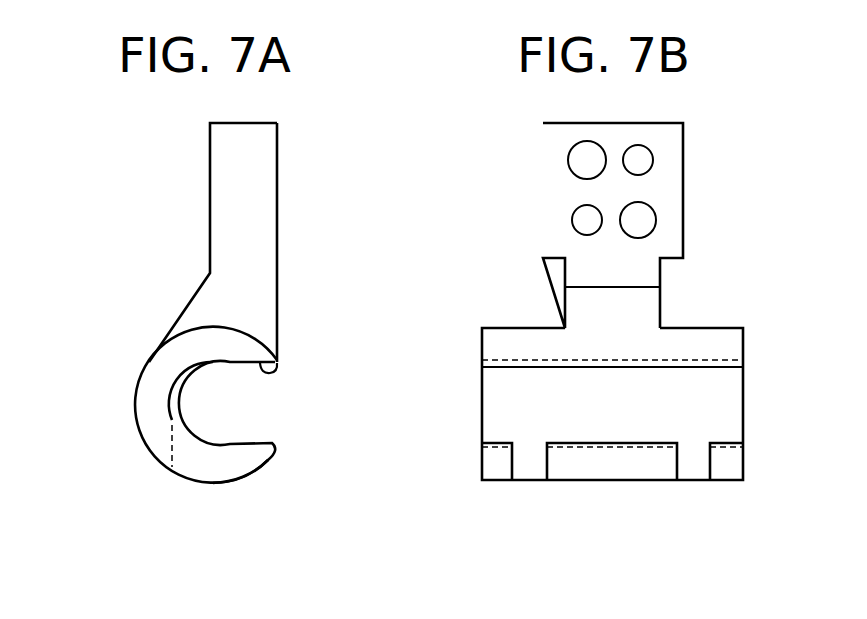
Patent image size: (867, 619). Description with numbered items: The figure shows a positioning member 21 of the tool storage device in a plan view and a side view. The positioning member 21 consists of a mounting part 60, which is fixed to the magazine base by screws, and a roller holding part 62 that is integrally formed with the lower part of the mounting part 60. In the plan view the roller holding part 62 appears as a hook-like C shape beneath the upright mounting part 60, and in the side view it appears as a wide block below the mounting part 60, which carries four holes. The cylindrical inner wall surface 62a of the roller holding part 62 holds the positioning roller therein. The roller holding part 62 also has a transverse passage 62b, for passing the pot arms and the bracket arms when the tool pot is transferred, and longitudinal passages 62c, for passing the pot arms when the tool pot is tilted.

In FIG. 7A, the mounting part 60 is at (267, 157).
In FIG. 7B, the mounting part 60 is at (675, 160).
In FIG. 7A, the roller holding part 62 is at (145, 377).
In FIG. 7B, the roller holding part 62 is at (512, 337).
In FIG. 7A, the cylindrical inner wall surface 62a is at (192, 370).
In FIG. 7B, the cylindrical inner wall surface 62a is at (500, 403).
In FIG. 7A, the transverse passage 62b is at (270, 374).
In FIG. 7B, the transverse passage 62b is at (725, 368).
In FIG. 7B, the longitudinal passages 62c is at (545, 458).
In FIG. 7A, the positioning member 21 is at (251, 487).
In FIG. 7B, the positioning member 21 is at (595, 488).